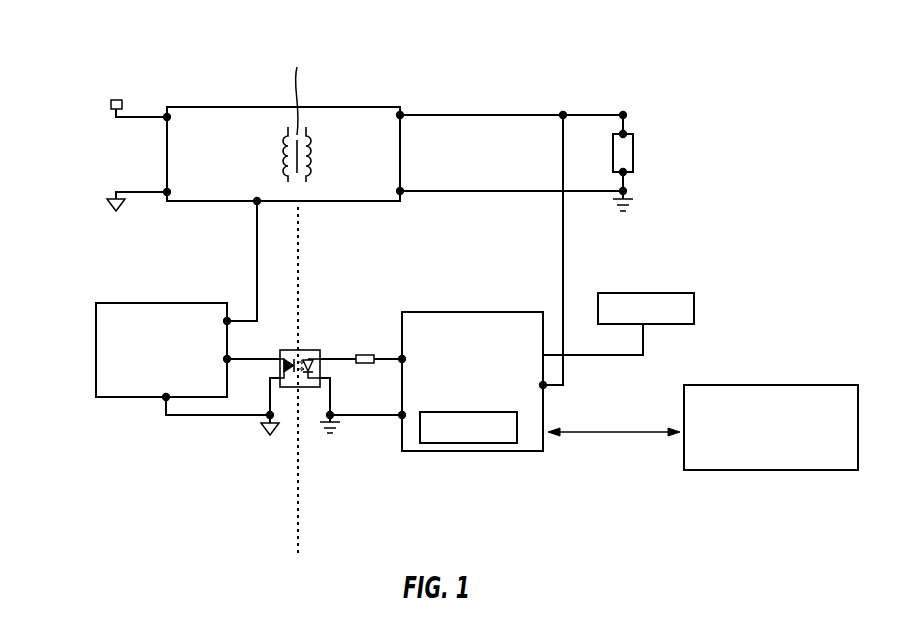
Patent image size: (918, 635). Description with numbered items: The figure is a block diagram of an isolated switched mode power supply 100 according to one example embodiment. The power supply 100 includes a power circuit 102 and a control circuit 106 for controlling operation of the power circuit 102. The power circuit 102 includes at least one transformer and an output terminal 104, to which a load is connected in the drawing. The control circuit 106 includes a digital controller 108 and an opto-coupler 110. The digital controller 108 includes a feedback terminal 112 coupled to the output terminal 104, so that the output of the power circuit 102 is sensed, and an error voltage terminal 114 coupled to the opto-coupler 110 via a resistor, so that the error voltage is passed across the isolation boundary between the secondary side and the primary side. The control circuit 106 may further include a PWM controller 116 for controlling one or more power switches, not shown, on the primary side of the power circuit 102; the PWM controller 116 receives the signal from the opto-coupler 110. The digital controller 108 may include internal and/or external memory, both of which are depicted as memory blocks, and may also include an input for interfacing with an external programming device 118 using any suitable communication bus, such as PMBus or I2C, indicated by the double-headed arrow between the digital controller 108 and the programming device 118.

The isolated switched mode power supply 100 is at (431, 280).
The power circuit 102 is at (712, 77).
The output terminal 104 is at (623, 113).
The control circuit 106 is at (148, 363).
The digital controller 108 is at (473, 451).
The opto-coupler 110 is at (320, 350).
The feedback terminal 112 is at (543, 385).
The error voltage terminal 114 is at (402, 357).
The PWM controller 116 is at (161, 331).
The external programming device 118 is at (760, 470).